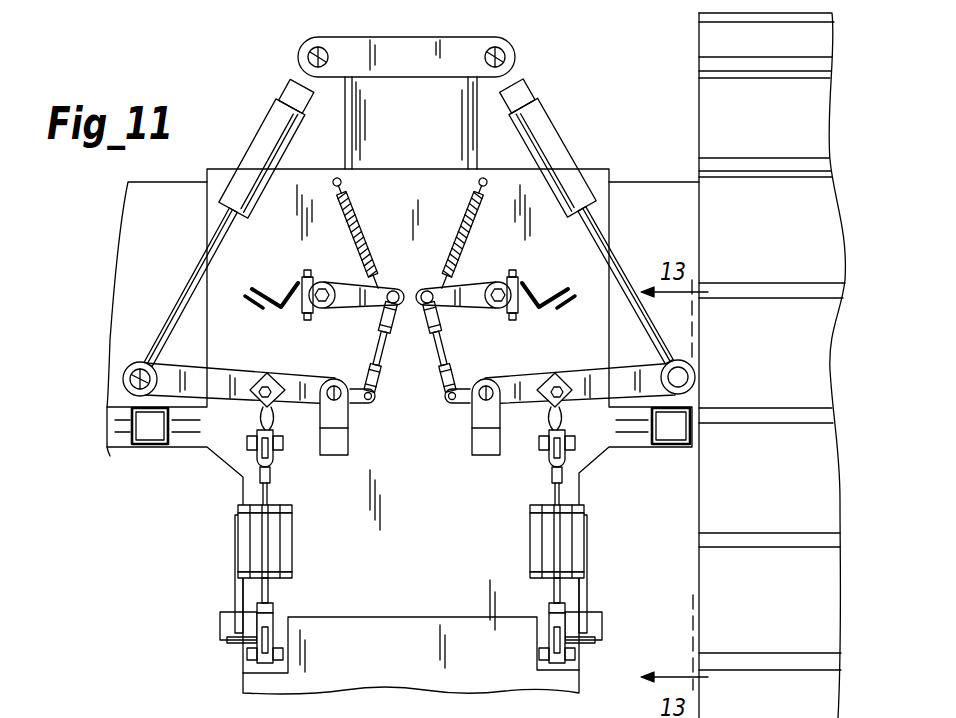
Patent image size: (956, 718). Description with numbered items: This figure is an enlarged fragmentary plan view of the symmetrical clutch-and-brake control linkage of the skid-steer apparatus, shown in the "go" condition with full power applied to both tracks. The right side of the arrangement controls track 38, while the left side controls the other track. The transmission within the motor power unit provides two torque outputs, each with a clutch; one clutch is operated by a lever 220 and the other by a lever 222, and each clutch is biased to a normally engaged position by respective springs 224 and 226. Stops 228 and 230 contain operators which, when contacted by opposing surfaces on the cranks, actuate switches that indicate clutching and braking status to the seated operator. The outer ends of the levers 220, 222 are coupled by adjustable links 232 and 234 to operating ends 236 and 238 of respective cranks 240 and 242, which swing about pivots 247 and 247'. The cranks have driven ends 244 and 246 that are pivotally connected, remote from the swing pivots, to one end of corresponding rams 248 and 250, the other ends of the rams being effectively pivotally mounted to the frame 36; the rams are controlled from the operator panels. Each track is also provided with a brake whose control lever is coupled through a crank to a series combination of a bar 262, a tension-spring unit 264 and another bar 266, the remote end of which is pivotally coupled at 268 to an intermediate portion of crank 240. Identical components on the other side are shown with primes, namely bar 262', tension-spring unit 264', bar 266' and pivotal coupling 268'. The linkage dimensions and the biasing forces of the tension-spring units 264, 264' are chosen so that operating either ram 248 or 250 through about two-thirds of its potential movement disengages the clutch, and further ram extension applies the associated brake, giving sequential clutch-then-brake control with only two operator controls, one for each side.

The frame 36 is at (173, 181).
The track 38 is at (697, 53).
The lever 220 is at (478, 287).
The lever 222 is at (342, 280).
The spring 224 is at (460, 229).
The spring 226 is at (362, 210).
The stop 228 is at (528, 285).
The stop 230 is at (281, 285).
The adjustable link 232 is at (441, 352).
The adjustable link 234 is at (378, 352).
The operating end 236 is at (453, 390).
The operating end 238 is at (376, 398).
The crank 240 is at (594, 372).
The crank 242 is at (222, 376).
The driven end 244 is at (690, 376).
The driven end 246 is at (124, 377).
The swing pivot 247 is at (458, 417).
The swing pivot 247' is at (359, 417).
The ram 248 is at (547, 123).
The ram 250 is at (277, 115).
The bar 262 is at (590, 619).
The bar 262' is at (295, 620).
The tension-spring unit 264 is at (536, 574).
The tension-spring unit 264' is at (283, 574).
The bar 266 is at (529, 468).
The bar 266' is at (297, 468).
The pivotal coupling 268 is at (540, 384).
The pivotal coupling 268' is at (279, 384).